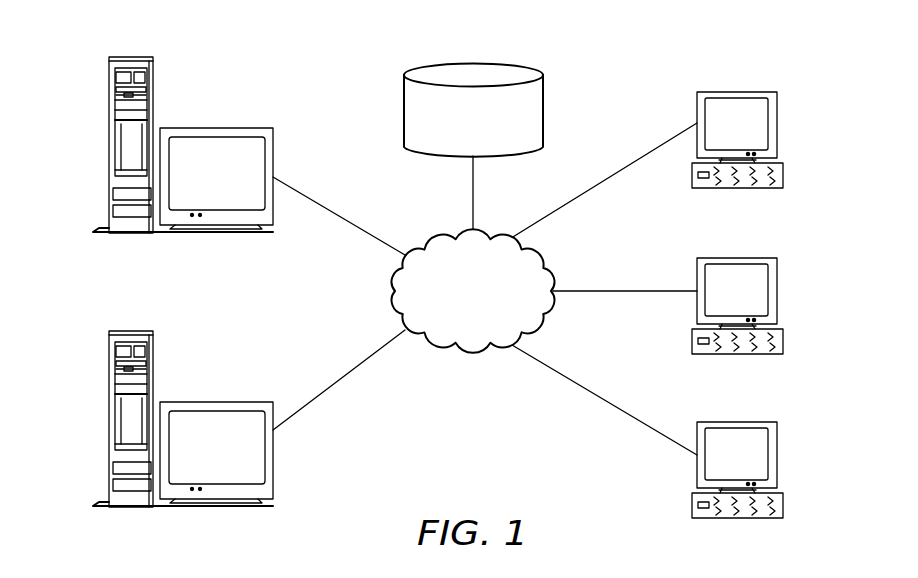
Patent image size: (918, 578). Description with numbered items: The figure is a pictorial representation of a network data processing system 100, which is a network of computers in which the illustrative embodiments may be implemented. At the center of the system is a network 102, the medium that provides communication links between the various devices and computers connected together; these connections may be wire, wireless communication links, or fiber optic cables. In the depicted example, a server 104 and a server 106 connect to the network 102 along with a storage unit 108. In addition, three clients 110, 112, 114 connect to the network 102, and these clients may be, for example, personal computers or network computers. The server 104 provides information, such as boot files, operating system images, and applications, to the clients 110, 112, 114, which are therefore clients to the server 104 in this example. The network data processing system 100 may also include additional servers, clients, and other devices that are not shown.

The network data processing system 100 is at (313, 77).
The network 102 is at (472, 348).
The server 104 is at (108, 146).
The server 106 is at (108, 420).
The storage unit 108 is at (543, 110).
The client 110 is at (777, 123).
The client 112 is at (777, 292).
The client 114 is at (777, 455).